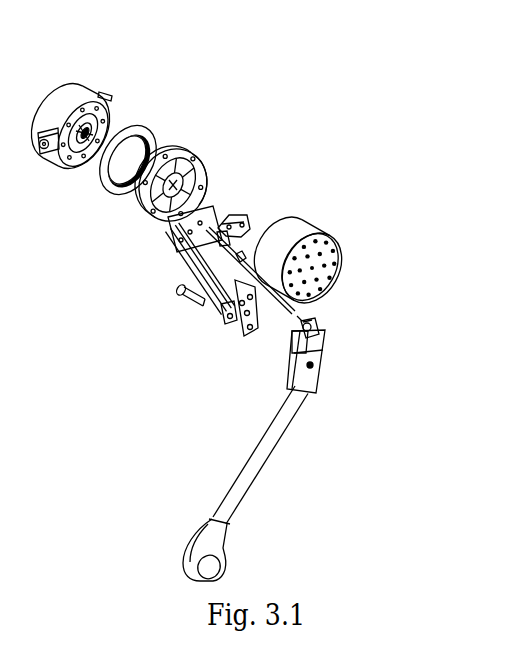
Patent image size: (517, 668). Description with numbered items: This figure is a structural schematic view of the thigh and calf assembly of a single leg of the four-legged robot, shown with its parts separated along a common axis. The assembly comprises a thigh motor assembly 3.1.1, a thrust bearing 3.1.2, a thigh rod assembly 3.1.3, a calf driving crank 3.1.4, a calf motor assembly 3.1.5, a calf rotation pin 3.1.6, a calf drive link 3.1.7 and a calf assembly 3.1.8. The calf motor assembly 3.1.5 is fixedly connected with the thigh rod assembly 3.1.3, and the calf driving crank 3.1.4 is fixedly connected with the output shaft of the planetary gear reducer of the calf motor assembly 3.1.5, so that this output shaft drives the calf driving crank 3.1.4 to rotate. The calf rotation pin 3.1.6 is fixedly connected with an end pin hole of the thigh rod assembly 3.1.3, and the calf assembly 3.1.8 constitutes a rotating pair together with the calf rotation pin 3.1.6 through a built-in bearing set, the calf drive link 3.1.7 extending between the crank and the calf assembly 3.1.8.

The thigh motor assembly 3.1.1 is at (65, 102).
The thrust bearing 3.1.2 is at (138, 133).
The thigh rod assembly 3.1.3 is at (170, 158).
The calf driving crank 3.1.4 is at (245, 215).
The calf motor assembly 3.1.5 is at (293, 235).
The calf rotation pin 3.1.6 is at (179, 295).
The calf drive link 3.1.7 is at (293, 314).
The calf assembly 3.1.8 is at (265, 443).